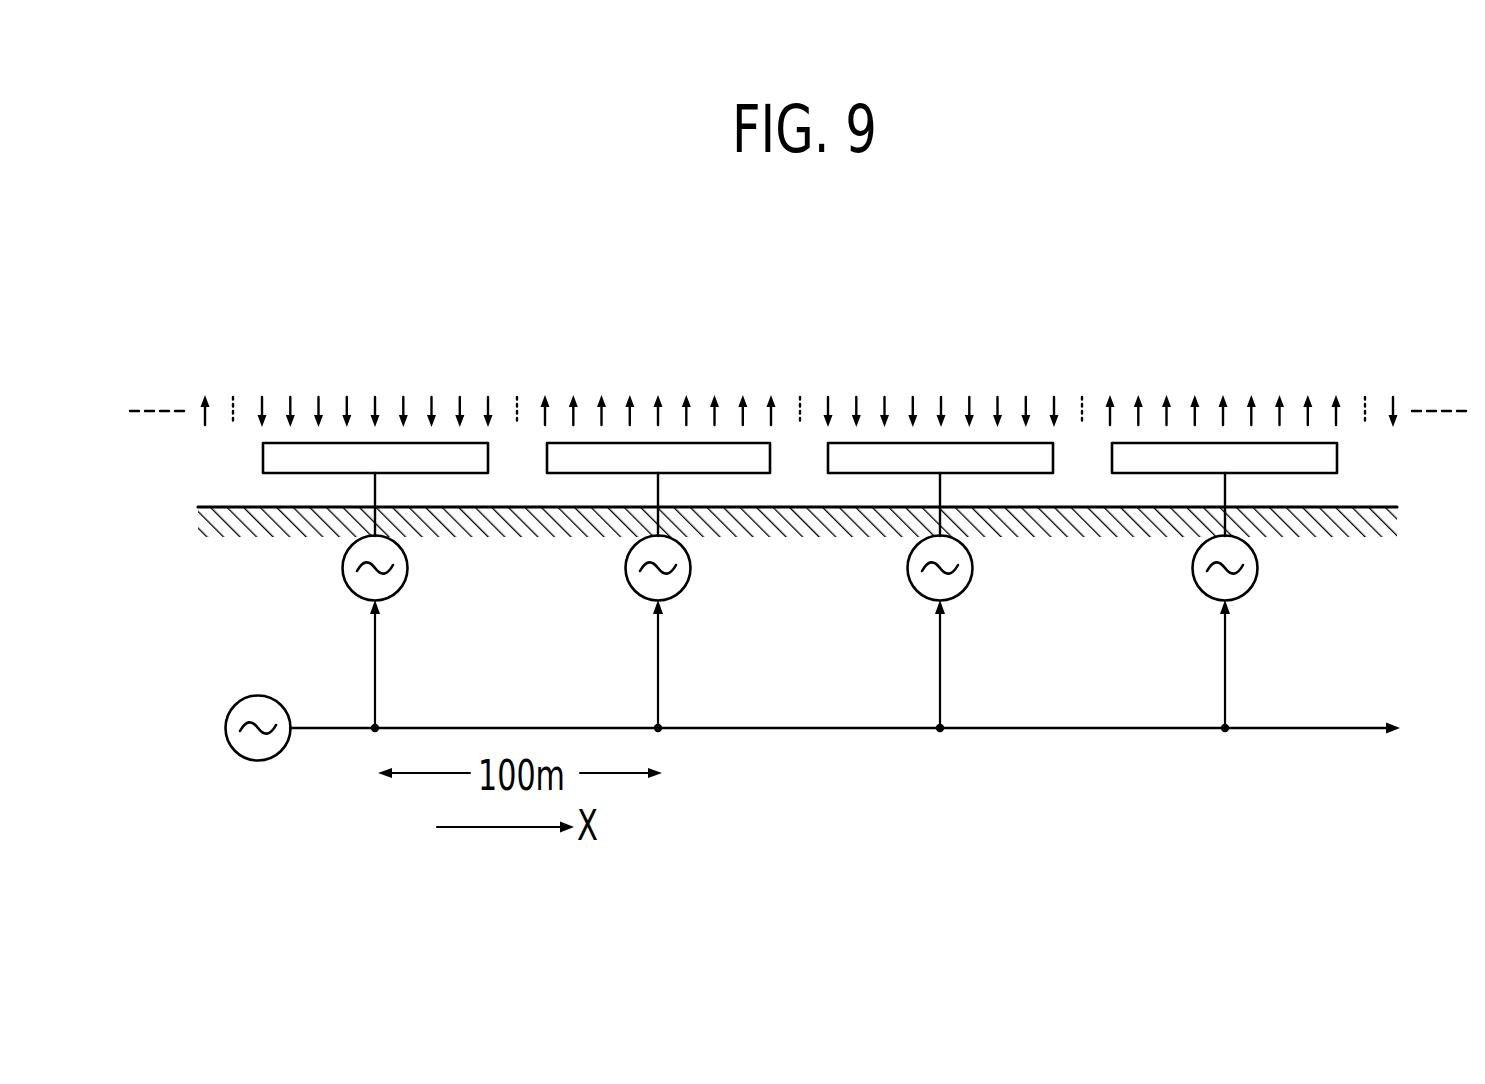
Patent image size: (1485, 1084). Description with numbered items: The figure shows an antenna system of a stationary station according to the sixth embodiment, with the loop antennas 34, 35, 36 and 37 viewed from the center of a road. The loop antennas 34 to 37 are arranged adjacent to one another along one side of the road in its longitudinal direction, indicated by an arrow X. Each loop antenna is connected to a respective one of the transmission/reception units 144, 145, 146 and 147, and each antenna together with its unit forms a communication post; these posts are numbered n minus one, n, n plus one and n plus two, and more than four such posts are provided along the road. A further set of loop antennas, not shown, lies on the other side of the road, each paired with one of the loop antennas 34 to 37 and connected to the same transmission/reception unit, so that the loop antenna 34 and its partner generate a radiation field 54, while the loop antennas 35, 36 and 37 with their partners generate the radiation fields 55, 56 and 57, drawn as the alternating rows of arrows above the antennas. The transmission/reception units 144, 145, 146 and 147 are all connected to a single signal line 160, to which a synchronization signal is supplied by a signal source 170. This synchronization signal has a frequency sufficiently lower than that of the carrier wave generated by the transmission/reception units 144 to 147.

The loop antenna 34 is at (473, 443).
The loop antenna 35 is at (752, 443).
The loop antenna 36 is at (1035, 443).
The loop antenna 37 is at (1317, 443).
The radiation field 54 is at (432, 416).
The radiation field 55 is at (714, 416).
The radiation field 56 is at (995, 416).
The radiation field 57 is at (1280, 416).
The transmission/reception unit 144 is at (403, 588).
The transmission/reception unit 145 is at (686, 588).
The transmission/reception unit 146 is at (968, 588).
The transmission/reception unit 147 is at (1253, 588).
The signal line 160 is at (529, 716).
The signal source 170 is at (233, 701).